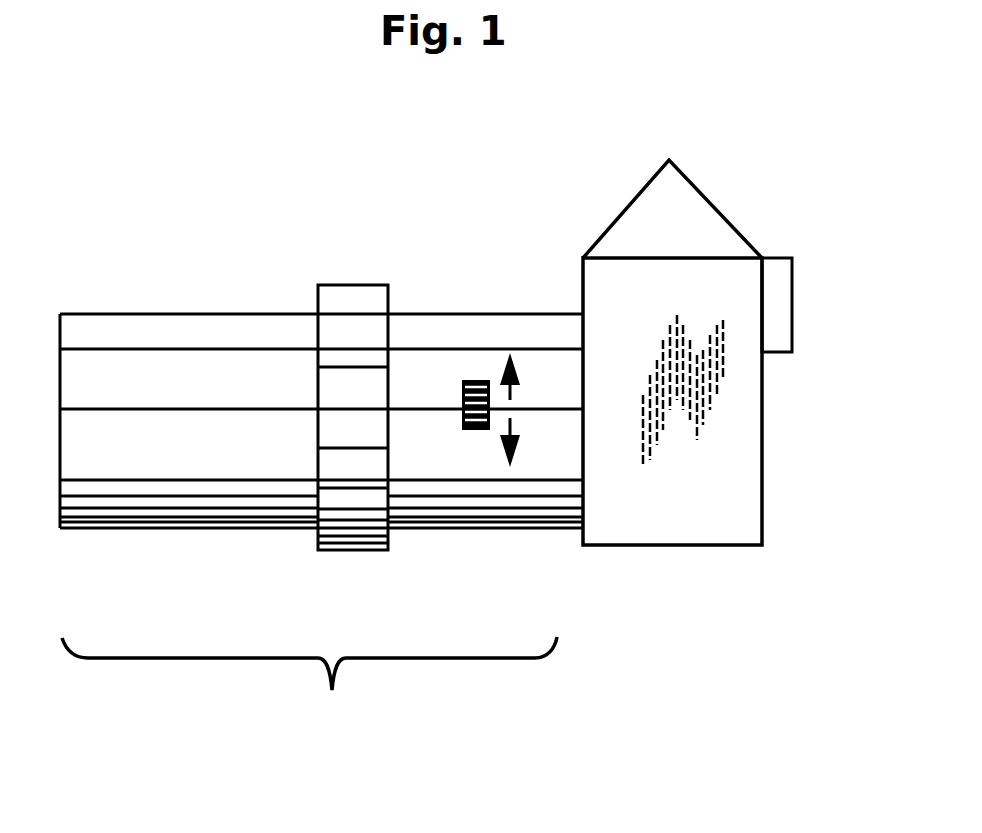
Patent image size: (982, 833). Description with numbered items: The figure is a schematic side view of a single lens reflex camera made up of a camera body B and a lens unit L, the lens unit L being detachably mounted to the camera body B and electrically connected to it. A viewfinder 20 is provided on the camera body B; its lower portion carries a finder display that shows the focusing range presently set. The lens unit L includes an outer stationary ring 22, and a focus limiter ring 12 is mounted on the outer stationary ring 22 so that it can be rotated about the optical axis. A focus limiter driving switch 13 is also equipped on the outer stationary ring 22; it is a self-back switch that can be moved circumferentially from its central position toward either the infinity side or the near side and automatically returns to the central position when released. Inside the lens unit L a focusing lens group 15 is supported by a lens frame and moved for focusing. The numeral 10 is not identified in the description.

The outer stationary ring 22 is at (457, 332).
The focus limiter ring 12 is at (352, 505).
The section 10 is at (353, 326).
The focusing lens group 15 is at (353, 407).
The focus limiter driving switch 13 is at (473, 430).
The camera body B is at (677, 513).
The viewfinder 20 is at (782, 308).
The lens unit L is at (309, 689).